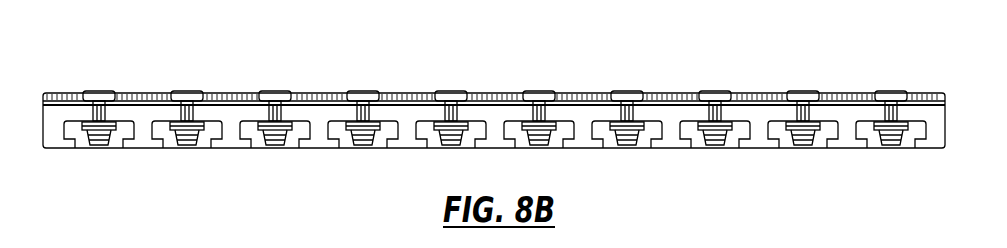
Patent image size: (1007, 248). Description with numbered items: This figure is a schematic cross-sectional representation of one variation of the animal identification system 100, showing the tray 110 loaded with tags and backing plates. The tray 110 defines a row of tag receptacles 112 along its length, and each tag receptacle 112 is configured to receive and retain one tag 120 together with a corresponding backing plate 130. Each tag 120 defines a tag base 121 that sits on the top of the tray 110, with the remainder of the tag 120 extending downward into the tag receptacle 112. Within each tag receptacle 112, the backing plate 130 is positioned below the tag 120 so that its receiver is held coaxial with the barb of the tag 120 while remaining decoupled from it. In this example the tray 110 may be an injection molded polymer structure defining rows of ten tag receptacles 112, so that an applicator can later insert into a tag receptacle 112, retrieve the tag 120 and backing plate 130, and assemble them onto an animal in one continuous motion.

The animal identification system 100 is at (113, 55).
The tray 110 is at (55, 150).
The tag receptacle 112 is at (195, 67).
The tag 120 is at (809, 76).
The tag base 121 is at (803, 111).
The backing plate 130 is at (799, 167).